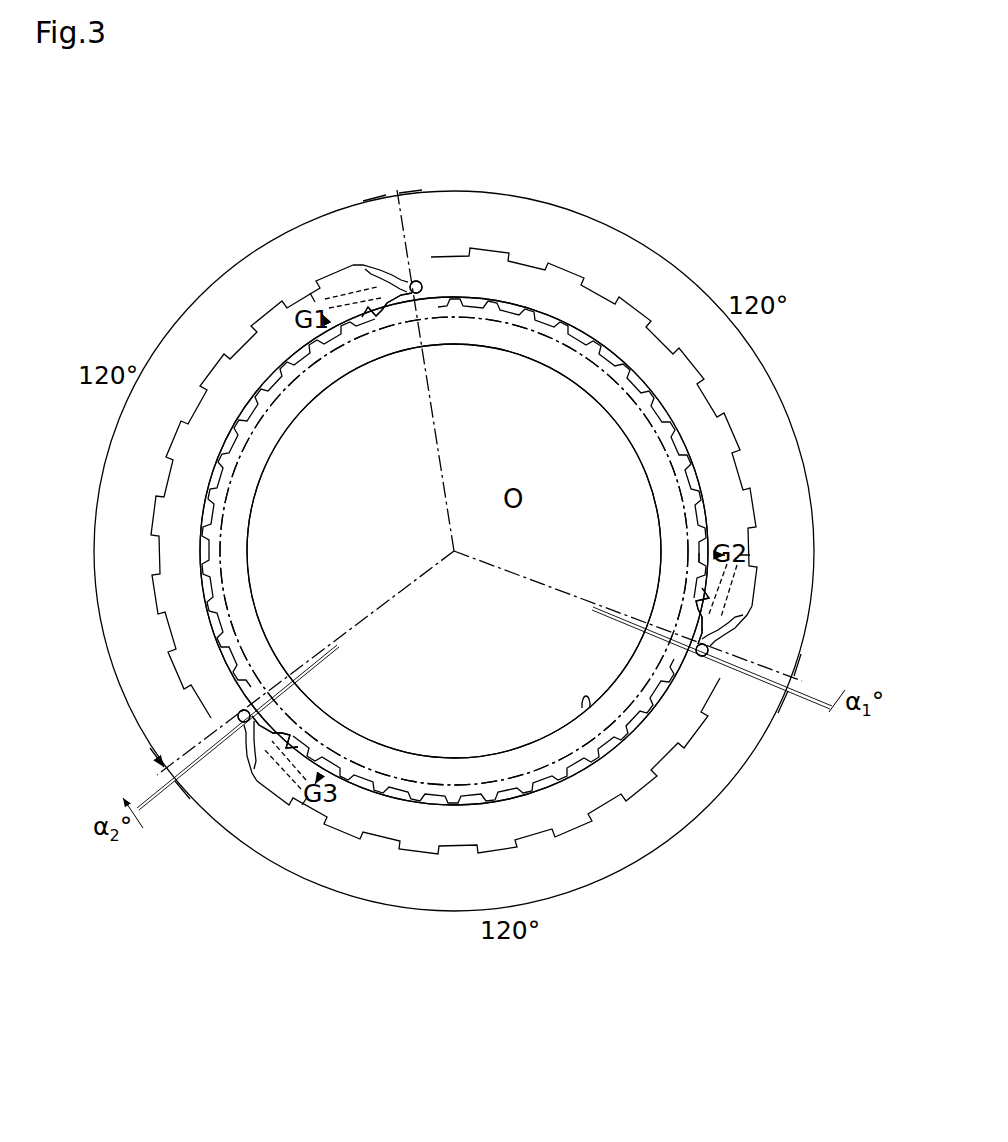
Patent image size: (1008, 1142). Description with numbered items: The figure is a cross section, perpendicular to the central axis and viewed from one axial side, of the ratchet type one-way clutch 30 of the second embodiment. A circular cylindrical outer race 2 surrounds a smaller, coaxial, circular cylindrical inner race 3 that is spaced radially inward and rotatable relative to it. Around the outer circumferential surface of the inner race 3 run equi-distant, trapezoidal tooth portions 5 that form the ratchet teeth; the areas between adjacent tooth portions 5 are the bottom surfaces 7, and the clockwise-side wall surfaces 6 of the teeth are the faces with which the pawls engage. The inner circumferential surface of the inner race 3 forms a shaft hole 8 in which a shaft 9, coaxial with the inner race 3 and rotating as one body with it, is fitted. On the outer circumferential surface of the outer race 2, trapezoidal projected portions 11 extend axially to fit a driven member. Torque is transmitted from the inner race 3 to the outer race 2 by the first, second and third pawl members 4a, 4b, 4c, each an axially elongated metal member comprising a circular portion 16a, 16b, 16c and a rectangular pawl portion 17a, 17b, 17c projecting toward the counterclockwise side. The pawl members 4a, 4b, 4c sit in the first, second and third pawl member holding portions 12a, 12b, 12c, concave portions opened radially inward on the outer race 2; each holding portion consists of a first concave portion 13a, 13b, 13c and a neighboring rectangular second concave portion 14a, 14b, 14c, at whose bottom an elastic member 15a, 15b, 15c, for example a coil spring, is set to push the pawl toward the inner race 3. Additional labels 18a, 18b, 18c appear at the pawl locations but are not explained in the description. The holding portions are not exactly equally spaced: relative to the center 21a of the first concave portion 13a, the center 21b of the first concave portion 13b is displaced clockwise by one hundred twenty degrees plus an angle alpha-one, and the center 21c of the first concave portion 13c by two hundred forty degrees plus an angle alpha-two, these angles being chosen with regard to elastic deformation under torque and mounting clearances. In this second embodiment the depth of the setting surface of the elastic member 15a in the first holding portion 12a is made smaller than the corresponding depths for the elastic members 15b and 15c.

The outer race 2 is at (633, 387).
The inner race 3 is at (667, 447).
The first pawl member 4a is at (427, 283).
The second pawl member 4b is at (690, 667).
The third pawl member 4c is at (236, 710).
The tooth portions 5 is at (667, 395).
The wall surfaces 6 is at (667, 407).
The bottom surfaces 7 is at (653, 393).
The shaft hole 8 is at (583, 706).
The shaft 9 is at (545, 712).
The projected portions 11 is at (625, 328).
The first pawl member holding portion 12a is at (345, 320).
The second pawl member holding portion 12b is at (710, 606).
The third pawl member holding portion 12c is at (288, 742).
The first concave portion 13a is at (419, 273).
The first concave portion 13b is at (725, 693).
The first concave portion 13c is at (250, 739).
The second concave portion 14a is at (378, 276).
The second concave portion 14b is at (713, 620).
The second concave portion 14c is at (277, 743).
The elastic member 15a is at (400, 287).
The elastic member 15b is at (695, 622).
The elastic member 15c is at (262, 722).
The circular portion 16a is at (422, 298).
The circular portion 16b is at (690, 653).
The circular portion 16c is at (258, 728).
The pawl portion 17a is at (392, 305).
The pawl portion 17b is at (695, 615).
The pawl portion 17c is at (268, 730).
The pin head 18a is at (487, 205).
The pin head 18b is at (770, 743).
The pin head 18c is at (301, 651).
The center of the first concave portion 21a is at (424, 286).
The center of the first concave portion 21b is at (698, 668).
The center of the first concave portion 21c is at (252, 712).
The one-way clutch 30 is at (731, 186).